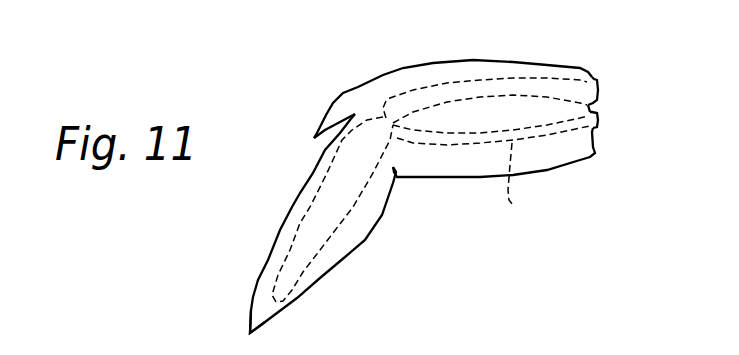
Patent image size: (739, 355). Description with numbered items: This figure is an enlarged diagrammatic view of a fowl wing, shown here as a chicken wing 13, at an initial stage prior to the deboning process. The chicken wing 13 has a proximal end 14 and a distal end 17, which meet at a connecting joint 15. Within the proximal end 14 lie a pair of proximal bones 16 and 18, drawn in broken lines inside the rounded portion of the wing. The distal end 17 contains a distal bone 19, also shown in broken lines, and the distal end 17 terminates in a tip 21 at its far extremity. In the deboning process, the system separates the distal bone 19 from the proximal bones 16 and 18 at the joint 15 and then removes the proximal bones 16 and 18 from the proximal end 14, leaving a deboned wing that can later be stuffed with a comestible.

The chicken wing 13 is at (447, 61).
The proximal end 14 is at (508, 65).
The joint 15 is at (379, 120).
The proximal bone 16 is at (597, 88).
The distal end 17 is at (333, 257).
The proximal bone 18 is at (597, 118).
The distal bone 19 is at (298, 228).
The tip 21 is at (258, 316).